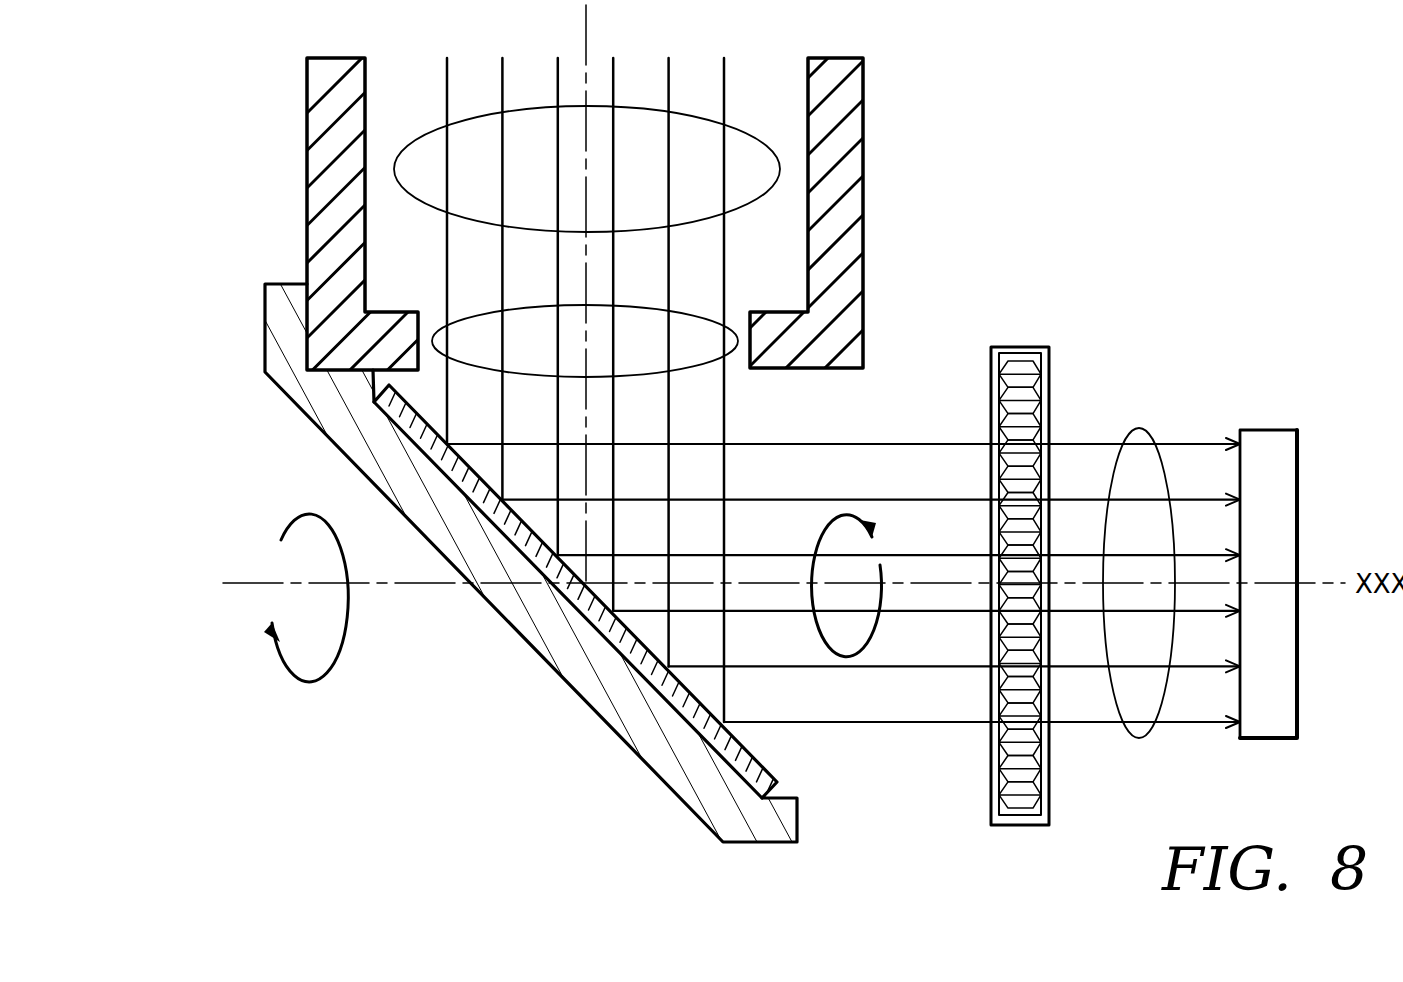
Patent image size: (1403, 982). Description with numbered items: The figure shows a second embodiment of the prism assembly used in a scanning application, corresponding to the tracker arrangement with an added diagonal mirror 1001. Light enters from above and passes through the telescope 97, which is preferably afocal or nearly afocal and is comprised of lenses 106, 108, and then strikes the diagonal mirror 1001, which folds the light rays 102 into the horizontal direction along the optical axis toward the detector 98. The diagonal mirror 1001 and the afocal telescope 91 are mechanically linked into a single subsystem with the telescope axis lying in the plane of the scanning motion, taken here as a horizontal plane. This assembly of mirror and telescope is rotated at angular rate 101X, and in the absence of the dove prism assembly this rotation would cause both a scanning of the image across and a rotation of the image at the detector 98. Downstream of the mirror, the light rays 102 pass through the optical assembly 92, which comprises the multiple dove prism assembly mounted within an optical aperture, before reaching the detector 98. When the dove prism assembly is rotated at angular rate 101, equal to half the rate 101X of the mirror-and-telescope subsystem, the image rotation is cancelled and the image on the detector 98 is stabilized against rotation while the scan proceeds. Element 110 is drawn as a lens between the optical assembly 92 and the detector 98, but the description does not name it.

The afocal telescope 91 is at (1195, 228).
The optical assembly 92 is at (1021, 347).
The telescope 97 is at (848, 176).
The detector 98 is at (1282, 445).
The angular rate of dove prism rotation 101 is at (828, 633).
The angular rate of mirror and telescope rotation 101X is at (330, 667).
The light rays 102 is at (945, 668).
The lens 106 is at (407, 155).
The lens 108 is at (691, 363).
The focusing lens 110 is at (1155, 473).
The diagonal mirror 1001 is at (692, 688).